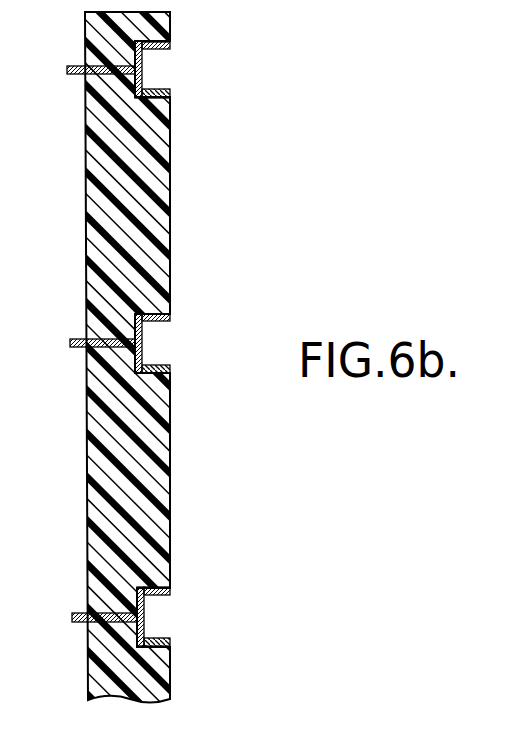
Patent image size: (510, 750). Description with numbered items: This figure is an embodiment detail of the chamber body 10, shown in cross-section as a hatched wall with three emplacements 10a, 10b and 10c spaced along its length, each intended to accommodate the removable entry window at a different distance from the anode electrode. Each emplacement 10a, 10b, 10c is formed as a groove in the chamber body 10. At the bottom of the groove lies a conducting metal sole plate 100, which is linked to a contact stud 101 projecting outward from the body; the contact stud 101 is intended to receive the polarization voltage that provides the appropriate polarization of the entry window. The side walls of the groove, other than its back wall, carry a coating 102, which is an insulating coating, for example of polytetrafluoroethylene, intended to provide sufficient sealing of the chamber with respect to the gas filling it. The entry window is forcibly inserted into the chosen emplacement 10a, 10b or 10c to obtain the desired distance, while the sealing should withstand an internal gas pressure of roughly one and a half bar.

The chamber body 10 is at (102, 243).
The emplacement 10a is at (191, 65).
The emplacement 10b is at (147, 340).
The emplacement 10c is at (146, 621).
The conducting metal sole plate 100 is at (132, 62).
The contact stud 101 is at (70, 74).
The coating 102 is at (144, 45).